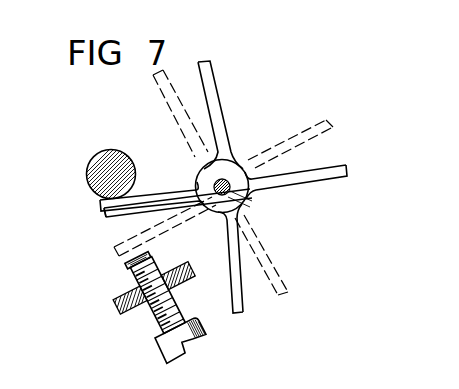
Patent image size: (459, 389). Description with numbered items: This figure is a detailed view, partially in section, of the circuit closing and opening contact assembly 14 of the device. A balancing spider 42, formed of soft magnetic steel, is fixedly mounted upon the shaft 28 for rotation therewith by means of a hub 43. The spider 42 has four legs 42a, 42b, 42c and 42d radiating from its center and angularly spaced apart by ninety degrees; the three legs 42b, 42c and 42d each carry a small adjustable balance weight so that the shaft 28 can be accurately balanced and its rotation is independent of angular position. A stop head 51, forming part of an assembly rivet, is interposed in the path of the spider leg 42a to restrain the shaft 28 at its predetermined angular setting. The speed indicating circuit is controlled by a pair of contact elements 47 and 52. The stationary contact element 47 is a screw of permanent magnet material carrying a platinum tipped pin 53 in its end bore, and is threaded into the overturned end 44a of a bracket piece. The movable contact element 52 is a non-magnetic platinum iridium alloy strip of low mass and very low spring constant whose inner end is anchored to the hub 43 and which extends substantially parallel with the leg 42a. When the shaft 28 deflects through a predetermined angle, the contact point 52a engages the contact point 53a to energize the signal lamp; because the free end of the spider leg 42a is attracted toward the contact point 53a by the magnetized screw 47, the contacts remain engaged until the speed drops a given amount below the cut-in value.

The latch assembly 14 is at (215, 304).
The shaft 28 is at (233, 180).
The balancing spider 42 is at (190, 201).
The spider leg 42a is at (119, 205).
The spider leg 42b is at (210, 69).
The spider leg 42c is at (323, 173).
The spider leg 42d is at (238, 314).
The hub 43 is at (199, 166).
The overturned end of bracket piece 44a is at (118, 310).
The stationary contact element 47 is at (165, 362).
The stop head 51 is at (101, 163).
The movable contact element 52 is at (166, 198).
The contact point 52a is at (108, 221).
The platinum tipped pin 53 is at (126, 266).
The contact point 53a is at (147, 242).